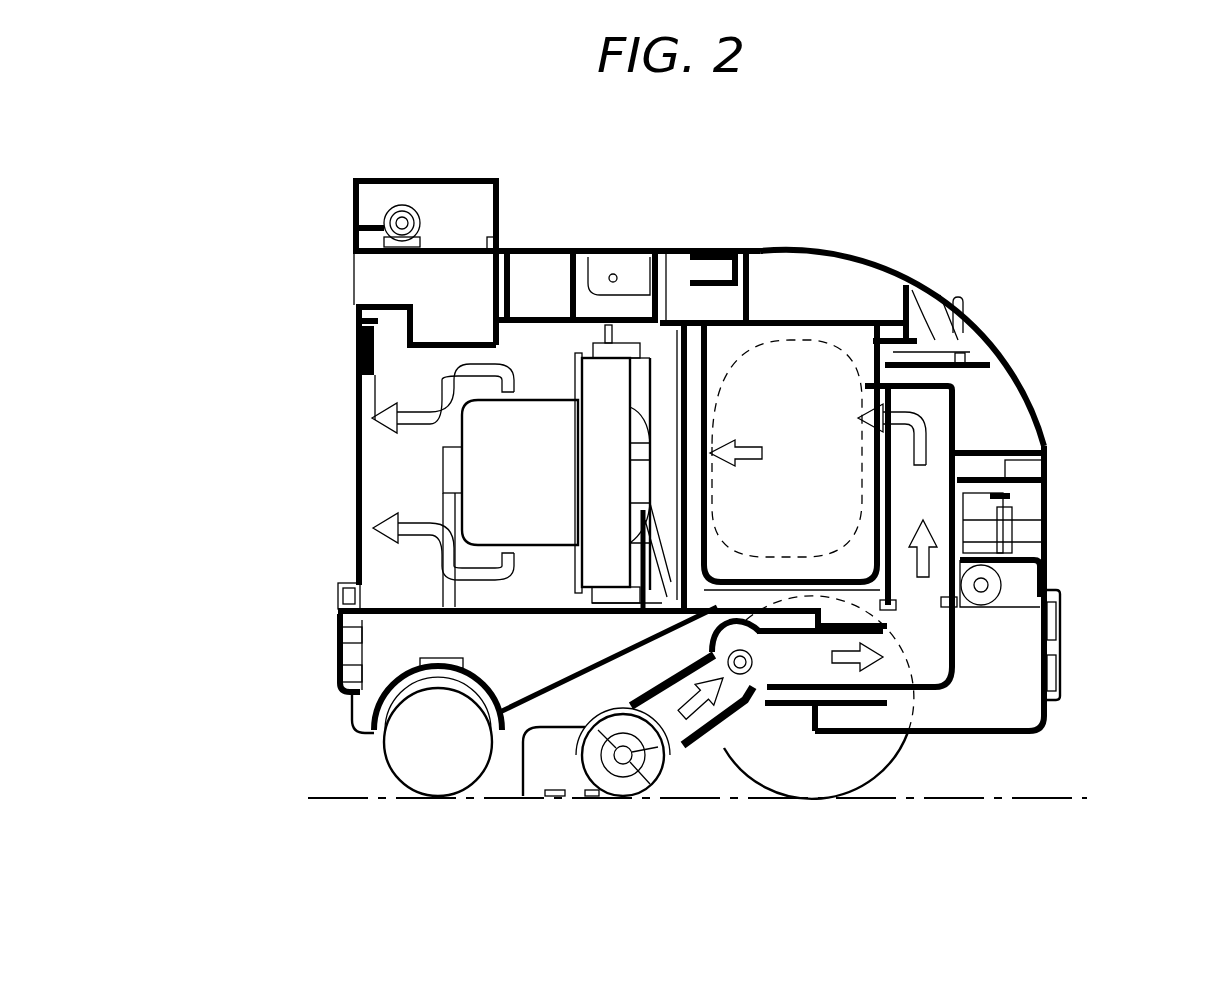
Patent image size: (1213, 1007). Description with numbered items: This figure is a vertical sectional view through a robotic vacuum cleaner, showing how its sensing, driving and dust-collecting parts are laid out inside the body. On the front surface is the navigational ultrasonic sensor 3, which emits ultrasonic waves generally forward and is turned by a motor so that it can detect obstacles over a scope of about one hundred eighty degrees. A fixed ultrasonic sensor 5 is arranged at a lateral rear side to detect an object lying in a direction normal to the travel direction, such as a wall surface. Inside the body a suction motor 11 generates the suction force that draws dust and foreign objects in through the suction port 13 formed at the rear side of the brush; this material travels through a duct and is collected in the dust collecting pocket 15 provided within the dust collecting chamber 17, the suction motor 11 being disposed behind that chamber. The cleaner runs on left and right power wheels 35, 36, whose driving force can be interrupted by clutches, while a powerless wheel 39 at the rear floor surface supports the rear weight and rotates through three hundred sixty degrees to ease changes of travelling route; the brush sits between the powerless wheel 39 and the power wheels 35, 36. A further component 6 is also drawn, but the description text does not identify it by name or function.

The navigational ultrasonic sensor 3 is at (1012, 530).
The fixed ultrasonic sensor 5 is at (520, 778).
The suction duct 6 is at (960, 651).
The suction motor 11 is at (529, 415).
The suction port 13 is at (598, 790).
The dust collecting pocket 15 is at (832, 340).
The dust collecting chamber 17 is at (748, 347).
The left power wheel 35 is at (863, 733).
The right power wheel 36 is at (902, 745).
The powerless wheel 39 is at (384, 758).